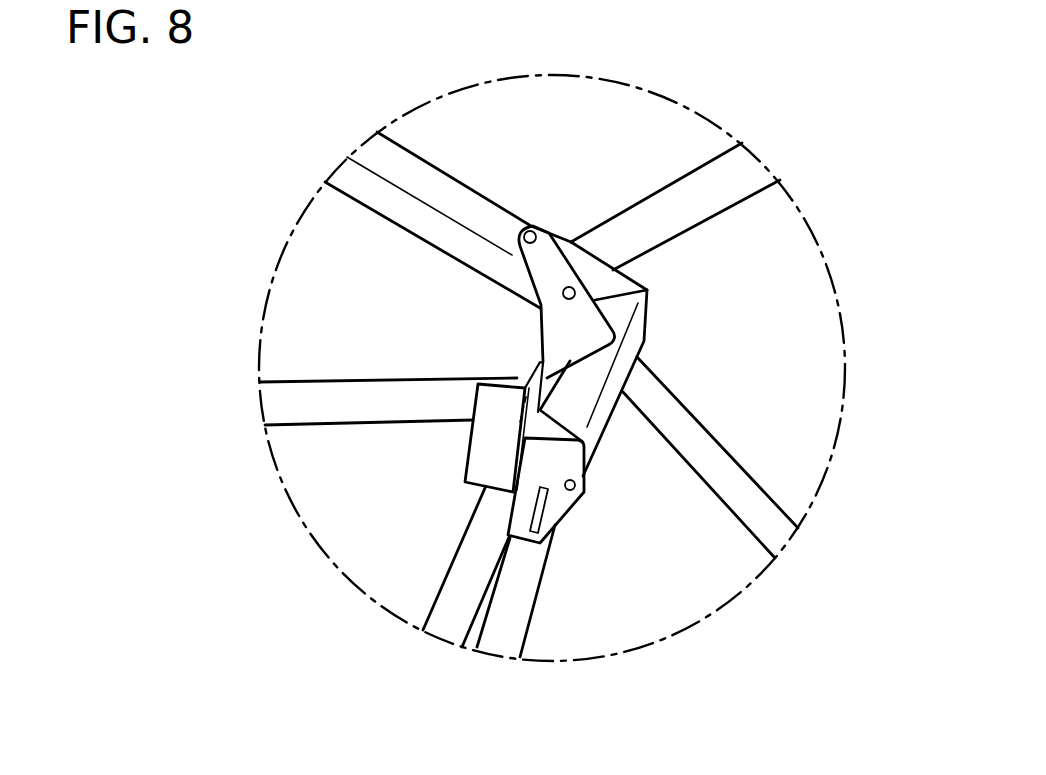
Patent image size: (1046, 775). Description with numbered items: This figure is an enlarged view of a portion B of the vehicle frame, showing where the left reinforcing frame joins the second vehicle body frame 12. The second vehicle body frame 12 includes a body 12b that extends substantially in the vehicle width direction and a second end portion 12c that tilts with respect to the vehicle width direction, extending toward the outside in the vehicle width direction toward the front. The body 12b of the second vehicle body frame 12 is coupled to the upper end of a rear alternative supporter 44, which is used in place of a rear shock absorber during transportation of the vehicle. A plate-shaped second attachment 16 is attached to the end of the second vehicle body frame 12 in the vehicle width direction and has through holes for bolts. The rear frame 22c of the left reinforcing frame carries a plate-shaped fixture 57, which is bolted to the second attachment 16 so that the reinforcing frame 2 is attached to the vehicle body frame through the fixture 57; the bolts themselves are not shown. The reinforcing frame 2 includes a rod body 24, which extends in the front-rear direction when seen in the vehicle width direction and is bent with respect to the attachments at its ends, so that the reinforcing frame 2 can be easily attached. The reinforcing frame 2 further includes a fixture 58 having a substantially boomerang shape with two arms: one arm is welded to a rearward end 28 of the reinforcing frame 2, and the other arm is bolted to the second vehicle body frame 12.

The second vehicle body frame 12 is at (552, 302).
The body 12b is at (475, 208).
The second end portion 12c is at (593, 428).
The reinforcing frame 2 is at (388, 390).
The rear frame 22c is at (357, 392).
The rod body 24 is at (323, 412).
The rearward end 28 is at (520, 422).
The rear alternative supporter 44 is at (703, 443).
The fixture 57 is at (465, 486).
The fixture 58 is at (546, 326).
The second attachment 16 is at (565, 505).
The portion B is at (787, 182).